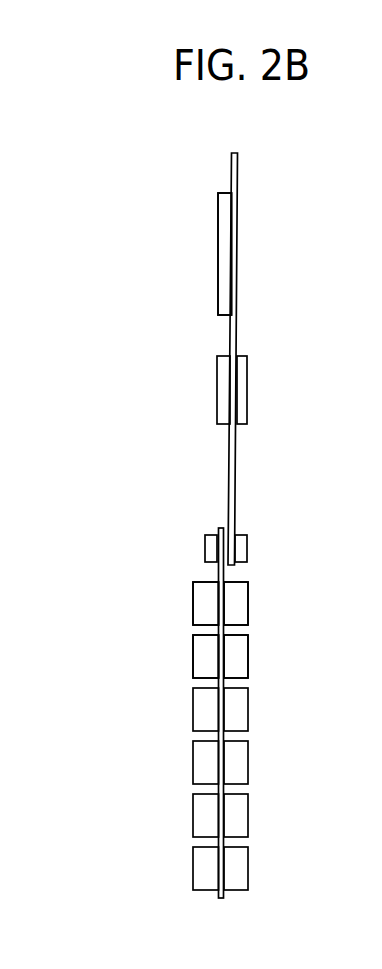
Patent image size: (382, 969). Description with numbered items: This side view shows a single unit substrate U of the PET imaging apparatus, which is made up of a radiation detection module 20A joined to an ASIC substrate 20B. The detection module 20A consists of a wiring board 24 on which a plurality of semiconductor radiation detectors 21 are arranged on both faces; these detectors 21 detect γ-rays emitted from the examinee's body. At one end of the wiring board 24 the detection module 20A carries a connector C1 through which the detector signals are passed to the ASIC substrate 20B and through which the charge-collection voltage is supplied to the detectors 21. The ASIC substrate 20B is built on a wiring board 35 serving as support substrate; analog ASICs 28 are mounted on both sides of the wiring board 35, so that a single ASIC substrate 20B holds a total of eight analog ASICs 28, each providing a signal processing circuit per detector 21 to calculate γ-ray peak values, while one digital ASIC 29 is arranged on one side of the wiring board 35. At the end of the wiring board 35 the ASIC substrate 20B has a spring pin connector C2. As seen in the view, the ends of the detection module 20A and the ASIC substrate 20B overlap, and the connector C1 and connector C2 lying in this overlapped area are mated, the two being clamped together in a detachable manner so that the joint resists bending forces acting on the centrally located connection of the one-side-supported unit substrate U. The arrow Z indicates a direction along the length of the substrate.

The unit substrate U is at (247, 150).
The ASIC substrate 20B is at (245, 242).
The digital ASIC 29 is at (225, 254).
The analog ASIC 28 is at (222, 392).
The wiring board 35 is at (235, 472).
The connector C1 is at (205, 545).
The connector C2 is at (224, 528).
The radiation detection module 20A is at (253, 581).
The semiconductor radiation detector 21 is at (203, 662).
The wiring board 24 is at (223, 734).
The Z direction Z is at (190, 918).